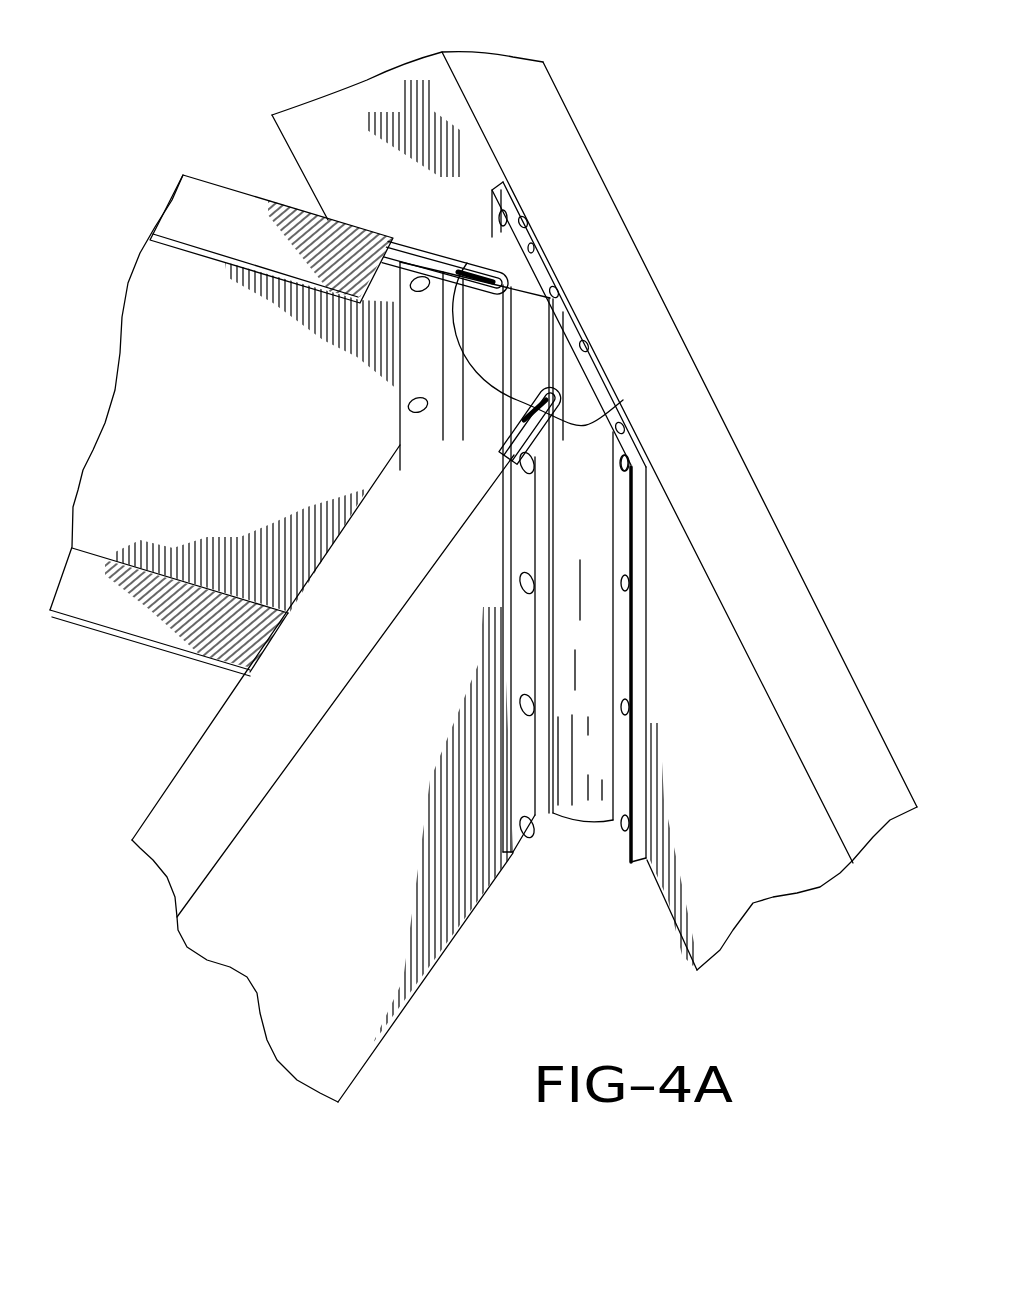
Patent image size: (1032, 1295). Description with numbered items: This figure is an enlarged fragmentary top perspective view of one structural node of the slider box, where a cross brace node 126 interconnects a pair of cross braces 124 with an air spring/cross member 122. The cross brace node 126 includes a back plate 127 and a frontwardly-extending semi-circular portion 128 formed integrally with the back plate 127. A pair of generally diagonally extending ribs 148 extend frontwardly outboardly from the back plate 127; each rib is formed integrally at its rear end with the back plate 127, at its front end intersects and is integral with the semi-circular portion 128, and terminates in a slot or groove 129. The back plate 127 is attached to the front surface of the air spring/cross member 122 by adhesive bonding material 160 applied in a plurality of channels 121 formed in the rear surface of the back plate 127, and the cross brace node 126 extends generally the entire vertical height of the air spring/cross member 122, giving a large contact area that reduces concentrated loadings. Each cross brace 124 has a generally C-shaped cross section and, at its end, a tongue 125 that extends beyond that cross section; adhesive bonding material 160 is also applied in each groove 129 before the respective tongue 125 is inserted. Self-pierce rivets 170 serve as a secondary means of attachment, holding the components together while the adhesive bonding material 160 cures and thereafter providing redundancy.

The channels 121 is at (518, 222).
The air spring/cross member 122 is at (750, 470).
The cross brace 124 is at (203, 182).
The tongue 125 is at (417, 253).
The cross brace node 126 is at (570, 822).
The back plate 127 is at (532, 247).
The semi-circular portion 128 is at (597, 820).
The slot or groove 129 is at (550, 428).
The diagonally extending ribs 148 is at (567, 375).
The adhesive bonding material 160 is at (458, 262).
The self-pierce rivets 170 is at (499, 211).